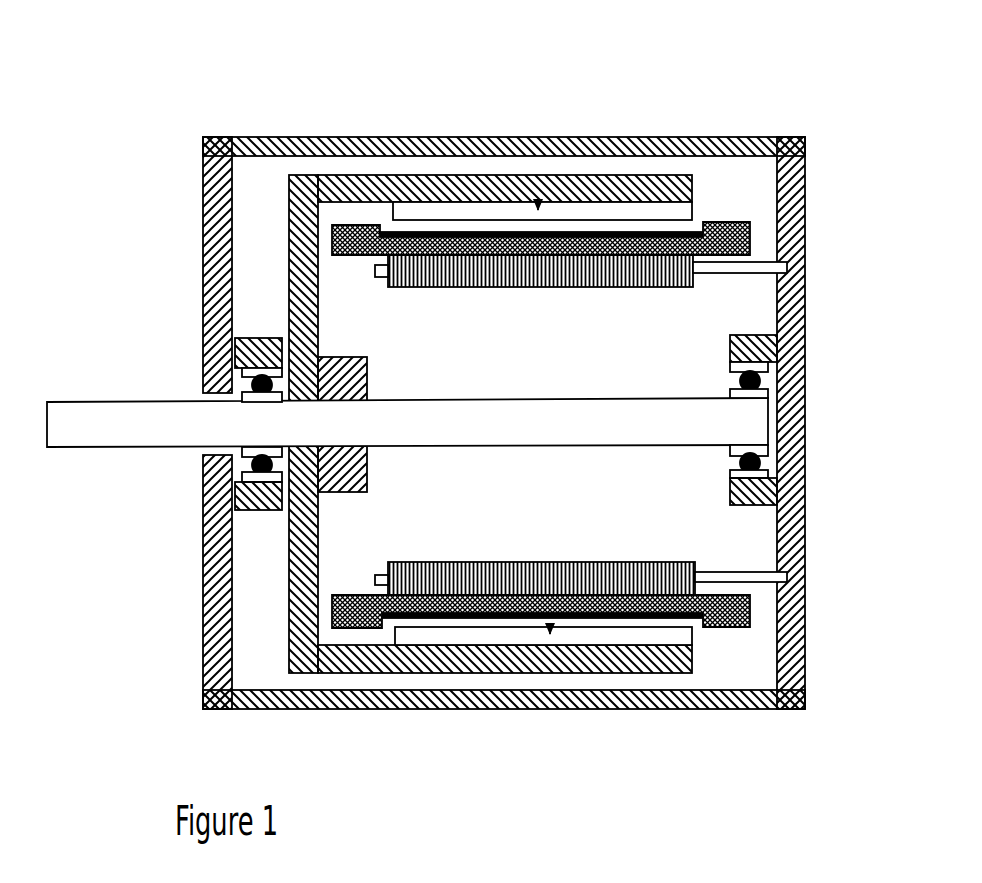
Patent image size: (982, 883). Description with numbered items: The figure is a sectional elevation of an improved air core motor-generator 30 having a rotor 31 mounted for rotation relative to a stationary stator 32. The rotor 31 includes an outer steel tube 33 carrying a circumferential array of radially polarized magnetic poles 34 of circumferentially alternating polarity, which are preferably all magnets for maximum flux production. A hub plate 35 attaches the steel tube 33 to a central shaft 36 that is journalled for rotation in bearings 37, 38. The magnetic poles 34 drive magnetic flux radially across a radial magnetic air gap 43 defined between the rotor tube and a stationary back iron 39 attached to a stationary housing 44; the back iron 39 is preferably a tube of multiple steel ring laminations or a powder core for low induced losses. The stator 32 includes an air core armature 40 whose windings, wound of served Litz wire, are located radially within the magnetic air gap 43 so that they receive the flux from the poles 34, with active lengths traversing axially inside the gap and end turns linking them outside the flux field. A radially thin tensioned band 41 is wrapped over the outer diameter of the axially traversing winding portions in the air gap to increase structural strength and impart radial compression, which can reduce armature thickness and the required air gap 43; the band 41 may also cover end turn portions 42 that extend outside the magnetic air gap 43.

The motor-generator 30 is at (461, 364).
The rotor 31 is at (250, 235).
The stator 32 is at (774, 246).
The outer steel tube 33 is at (663, 175).
The magnetic poles 34 is at (692, 207).
The hub plate 35 is at (318, 322).
The central shaft 36 is at (470, 398).
The bearing 37 is at (730, 368).
The bearing 38 is at (234, 366).
The back iron 39 is at (562, 287).
The air core armature 40 is at (643, 590).
The tensioned band 41 is at (700, 620).
The end turn portions 42 is at (350, 595).
The magnetic air gap 43 is at (378, 207).
The stationary housing 44 is at (810, 553).